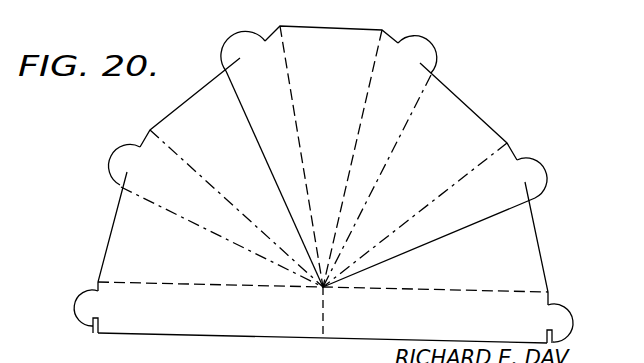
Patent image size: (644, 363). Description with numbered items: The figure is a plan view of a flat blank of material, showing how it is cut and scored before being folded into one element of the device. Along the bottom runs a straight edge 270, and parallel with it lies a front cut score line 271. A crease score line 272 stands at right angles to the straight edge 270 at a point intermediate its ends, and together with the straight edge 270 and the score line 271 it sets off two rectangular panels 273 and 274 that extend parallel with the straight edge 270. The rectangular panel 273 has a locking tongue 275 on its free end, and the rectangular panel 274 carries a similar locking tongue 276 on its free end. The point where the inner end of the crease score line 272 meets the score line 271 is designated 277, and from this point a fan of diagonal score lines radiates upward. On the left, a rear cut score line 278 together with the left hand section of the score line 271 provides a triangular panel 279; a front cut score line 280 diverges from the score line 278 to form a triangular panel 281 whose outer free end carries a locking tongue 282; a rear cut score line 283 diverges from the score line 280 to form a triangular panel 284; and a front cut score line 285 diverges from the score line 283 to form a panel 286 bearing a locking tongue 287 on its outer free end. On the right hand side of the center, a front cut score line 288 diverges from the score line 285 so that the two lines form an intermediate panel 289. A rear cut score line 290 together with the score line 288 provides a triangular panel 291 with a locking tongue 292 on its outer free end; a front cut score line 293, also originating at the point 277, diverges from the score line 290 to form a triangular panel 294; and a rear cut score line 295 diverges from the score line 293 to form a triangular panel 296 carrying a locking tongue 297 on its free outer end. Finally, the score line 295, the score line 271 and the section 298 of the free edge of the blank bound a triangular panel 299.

The straight edge 270 is at (238, 336).
The front cut score line 271 is at (165, 282).
The crease score line 272 is at (325, 319).
The rectangular panel 273 is at (200, 302).
The rectangular panel 274 is at (450, 314).
The locking tongue 275 is at (77, 313).
The locking tongue 276 is at (565, 312).
The point 277 is at (321, 288).
The rear cut score line 278 is at (183, 221).
The triangular panel 279 is at (127, 229).
The front cut score line 280 is at (200, 176).
The triangular panel 281 is at (222, 233).
The locking tongue 282 is at (110, 156).
The rear cut score line 283 is at (262, 157).
The triangular panel 284 is at (197, 103).
The front cut score line 285 is at (289, 73).
The panel 286 is at (284, 156).
The locking tongue 287 is at (236, 42).
The front cut score line 288 is at (363, 115).
The intermediate panel 289 is at (345, 40).
The rear cut score line 290 is at (411, 118).
The triangular panel 291 is at (366, 158).
The locking tongue 292 is at (420, 44).
The front cut score line 293 is at (415, 215).
The triangular panel 294 is at (455, 107).
The rear cut score line 295 is at (484, 232).
The triangular panel 296 is at (429, 231).
The locking tongue 297 is at (536, 162).
The section of the free edge 298 is at (540, 223).
The triangular panel 299 is at (532, 256).